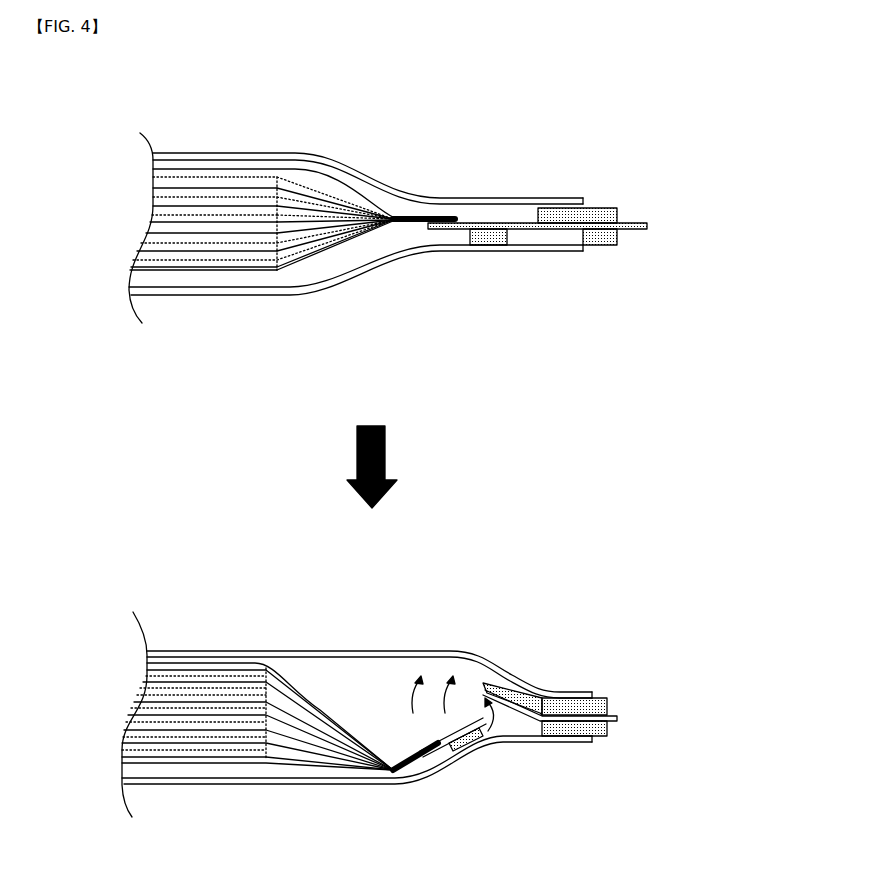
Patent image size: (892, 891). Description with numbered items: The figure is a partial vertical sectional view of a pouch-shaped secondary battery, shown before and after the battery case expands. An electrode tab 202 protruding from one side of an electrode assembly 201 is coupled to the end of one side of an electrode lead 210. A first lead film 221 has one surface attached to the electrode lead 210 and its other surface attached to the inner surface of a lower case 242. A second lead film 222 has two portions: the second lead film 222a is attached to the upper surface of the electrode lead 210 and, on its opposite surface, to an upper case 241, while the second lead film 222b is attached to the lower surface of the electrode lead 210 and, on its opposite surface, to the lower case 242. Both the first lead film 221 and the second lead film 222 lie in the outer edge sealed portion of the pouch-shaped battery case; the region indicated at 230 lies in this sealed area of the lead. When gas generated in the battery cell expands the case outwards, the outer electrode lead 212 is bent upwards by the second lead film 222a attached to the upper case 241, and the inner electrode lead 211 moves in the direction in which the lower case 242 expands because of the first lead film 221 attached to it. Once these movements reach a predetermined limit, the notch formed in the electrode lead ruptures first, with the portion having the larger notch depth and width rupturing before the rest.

The electrode assembly 201 is at (227, 270).
The electrode tab 202 is at (418, 215).
The electrode lead 210 is at (560, 227).
The inner electrode lead 211 is at (425, 757).
The outer electrode lead 212 is at (613, 719).
The first lead film 221 is at (483, 241).
The second lead film 222 is at (766, 203).
The second lead film (upper portion) 222a is at (618, 212).
The second lead film (lower portion) 222b is at (608, 237).
The bonding region 230 is at (523, 207).
The upper case 241 is at (272, 650).
The lower case 242 is at (280, 780).